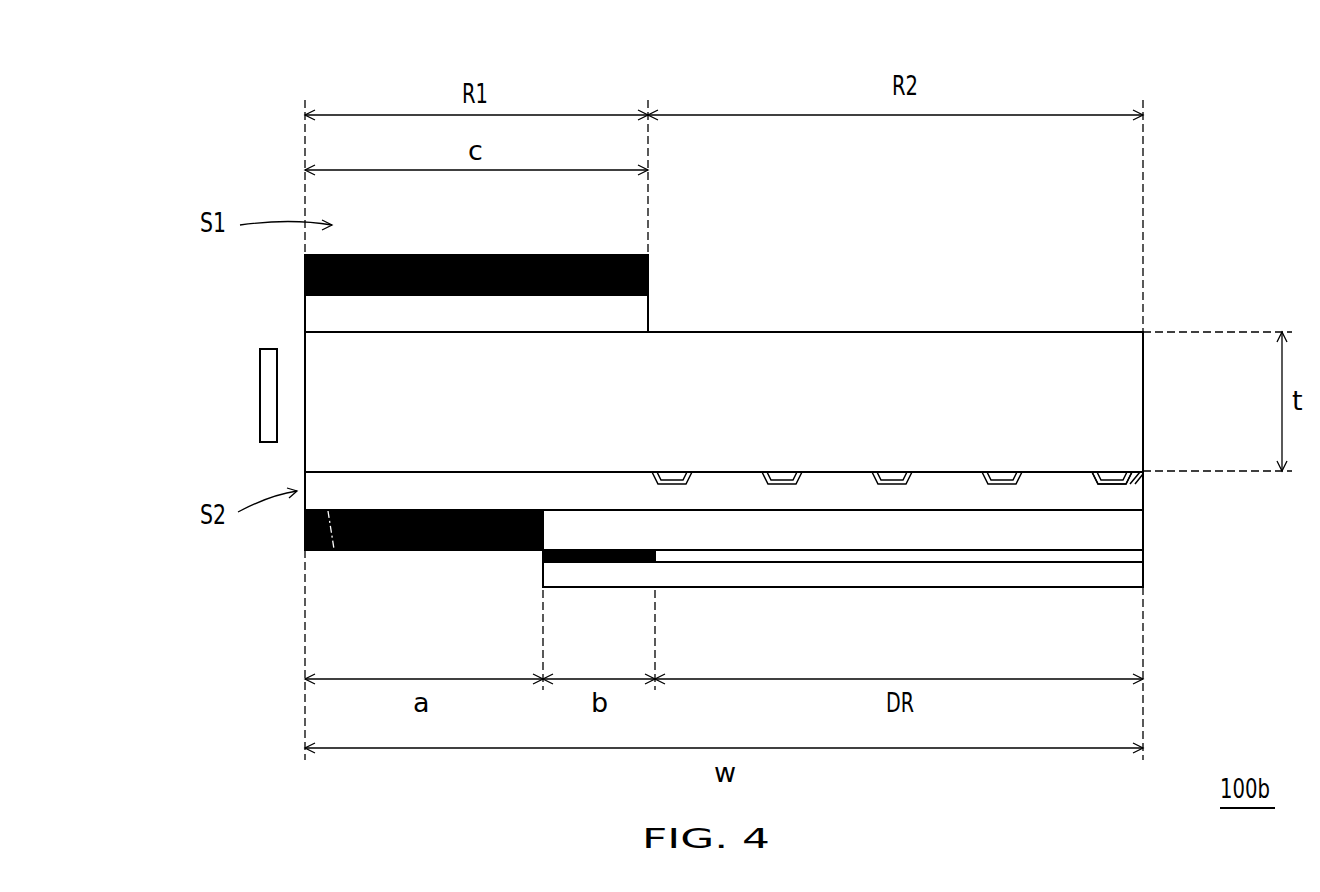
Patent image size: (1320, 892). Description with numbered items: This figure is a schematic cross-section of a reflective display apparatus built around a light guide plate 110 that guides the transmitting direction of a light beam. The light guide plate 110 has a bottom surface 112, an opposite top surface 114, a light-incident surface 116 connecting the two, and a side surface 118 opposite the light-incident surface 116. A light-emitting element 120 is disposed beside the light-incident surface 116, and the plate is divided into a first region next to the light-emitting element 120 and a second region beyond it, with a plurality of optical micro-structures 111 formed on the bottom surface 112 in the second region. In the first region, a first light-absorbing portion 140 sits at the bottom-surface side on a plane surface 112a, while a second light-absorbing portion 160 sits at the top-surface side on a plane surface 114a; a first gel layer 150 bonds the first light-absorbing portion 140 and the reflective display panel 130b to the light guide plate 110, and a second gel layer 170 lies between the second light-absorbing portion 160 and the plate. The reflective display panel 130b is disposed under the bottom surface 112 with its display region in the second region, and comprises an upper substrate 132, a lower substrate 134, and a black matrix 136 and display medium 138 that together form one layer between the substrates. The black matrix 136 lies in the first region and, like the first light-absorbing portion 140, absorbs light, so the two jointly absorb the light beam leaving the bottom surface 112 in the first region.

The light guide plate 110 is at (1117, 373).
The optical micro-structures 111 is at (1113, 485).
The bottom surface 112 is at (1137, 481).
The plane surface 112a is at (352, 474).
The top surface 114 is at (1070, 330).
The plane surface 114a is at (475, 330).
The light-incident surface 116 is at (303, 447).
The side surface 118 is at (1145, 428).
The light-emitting element 120 is at (268, 420).
The reflective display panel 130b is at (156, 62).
The upper substrate 132 is at (1123, 530).
The lower substrate 134 is at (1127, 575).
The black matrix 136 is at (593, 553).
The display medium 138 is at (1127, 555).
The first light-absorbing portion 140 is at (402, 530).
The first gel layer 150 is at (457, 493).
The second light-absorbing portion 160 is at (325, 277).
The second gel layer 170 is at (332, 317).